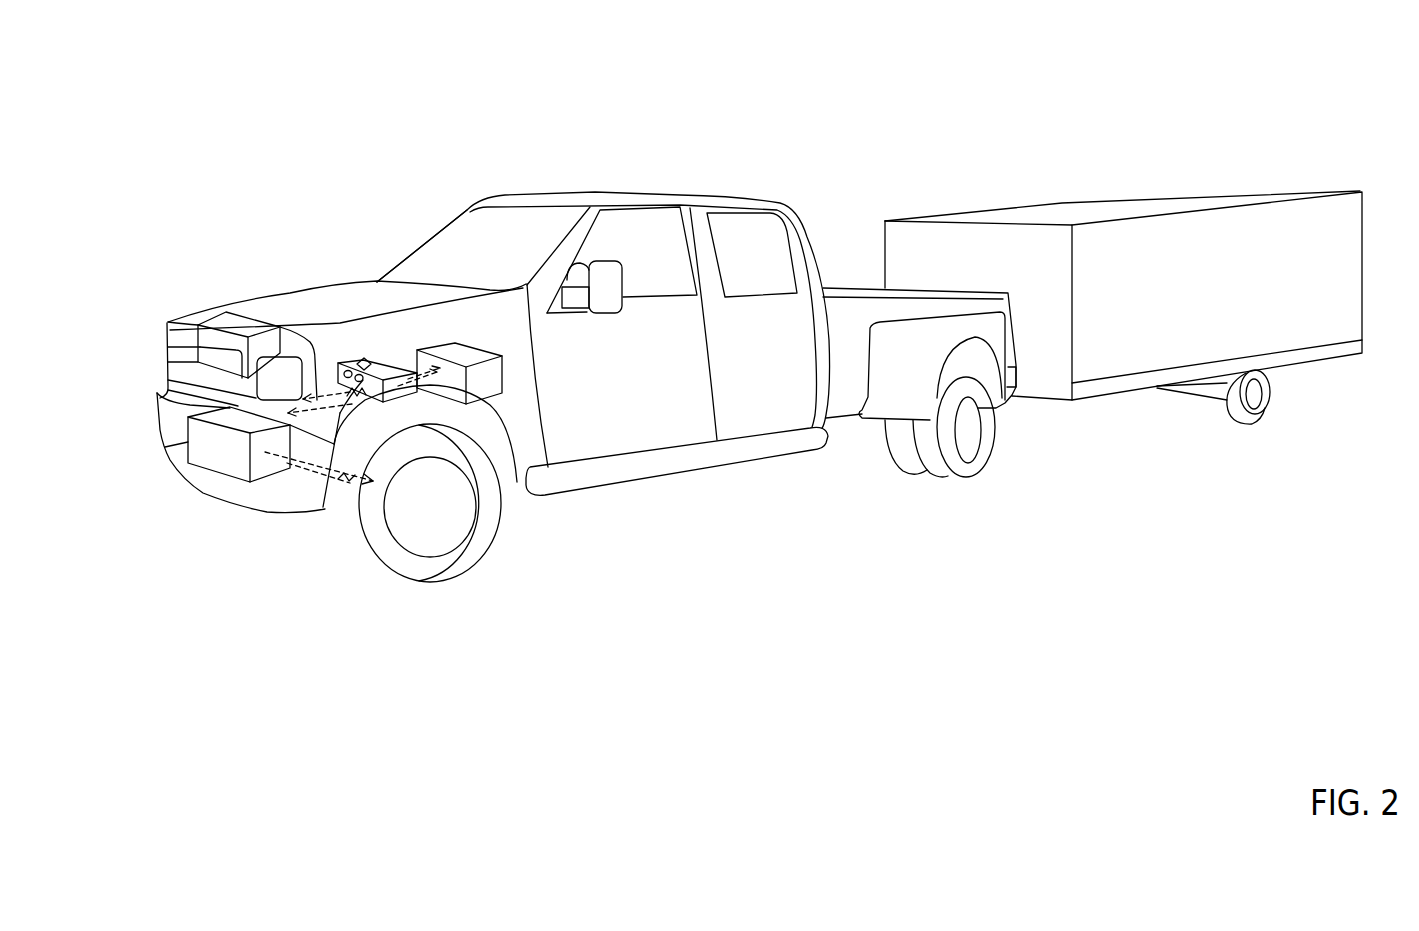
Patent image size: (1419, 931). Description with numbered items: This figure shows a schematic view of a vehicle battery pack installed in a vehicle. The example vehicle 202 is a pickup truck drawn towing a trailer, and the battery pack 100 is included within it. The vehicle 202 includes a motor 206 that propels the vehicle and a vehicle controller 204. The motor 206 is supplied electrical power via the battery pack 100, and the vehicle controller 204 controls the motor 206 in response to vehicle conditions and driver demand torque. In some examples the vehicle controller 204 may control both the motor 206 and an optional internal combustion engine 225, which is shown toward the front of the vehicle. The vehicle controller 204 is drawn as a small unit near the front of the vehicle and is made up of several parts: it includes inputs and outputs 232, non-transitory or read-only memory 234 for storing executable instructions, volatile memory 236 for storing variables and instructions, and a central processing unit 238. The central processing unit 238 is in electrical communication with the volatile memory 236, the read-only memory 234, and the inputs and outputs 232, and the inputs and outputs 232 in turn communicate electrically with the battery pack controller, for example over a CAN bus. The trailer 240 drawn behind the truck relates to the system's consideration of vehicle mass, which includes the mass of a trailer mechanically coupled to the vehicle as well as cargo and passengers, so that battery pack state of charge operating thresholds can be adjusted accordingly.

The battery pack 100 is at (447, 345).
The vehicle 202 is at (432, 240).
The vehicle controller 204 is at (290, 254).
The motor 206 is at (250, 482).
The internal combustion engine 225 is at (207, 322).
The inputs and outputs 232 is at (337, 353).
The read-only memory 234 is at (301, 312).
The volatile memory 236 is at (397, 358).
The central processing unit 238 is at (380, 344).
The trailer 240 is at (1021, 209).